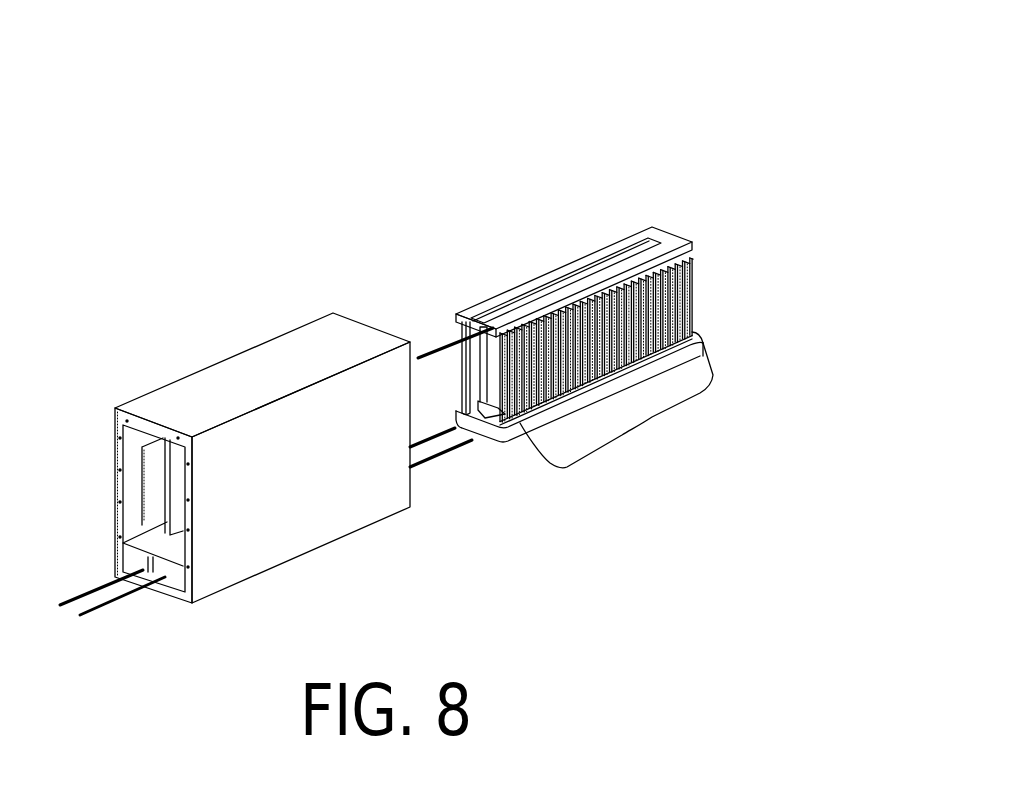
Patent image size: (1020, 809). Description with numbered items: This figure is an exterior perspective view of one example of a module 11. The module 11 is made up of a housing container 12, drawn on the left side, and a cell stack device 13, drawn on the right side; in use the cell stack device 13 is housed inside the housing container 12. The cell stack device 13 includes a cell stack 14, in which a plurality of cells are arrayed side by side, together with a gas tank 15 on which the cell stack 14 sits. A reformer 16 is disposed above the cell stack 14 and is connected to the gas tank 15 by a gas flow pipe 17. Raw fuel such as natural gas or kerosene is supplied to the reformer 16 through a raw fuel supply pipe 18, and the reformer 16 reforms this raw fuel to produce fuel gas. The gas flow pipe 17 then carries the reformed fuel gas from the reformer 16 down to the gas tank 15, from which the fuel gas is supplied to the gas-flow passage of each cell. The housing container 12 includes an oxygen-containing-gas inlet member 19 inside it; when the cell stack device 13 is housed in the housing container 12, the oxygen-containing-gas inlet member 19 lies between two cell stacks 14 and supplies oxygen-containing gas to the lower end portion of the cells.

The module 11 is at (207, 112).
The housing container 12 is at (233, 383).
The cell stack device 13 is at (605, 224).
The cell stack 14 is at (652, 417).
The gas tank 15 is at (503, 433).
The reformer 16 is at (528, 283).
The gas flow pipe 17 is at (462, 347).
The raw fuel supply pipe 18 is at (427, 350).
The oxygen-containing-gas inlet member 19 is at (178, 457).